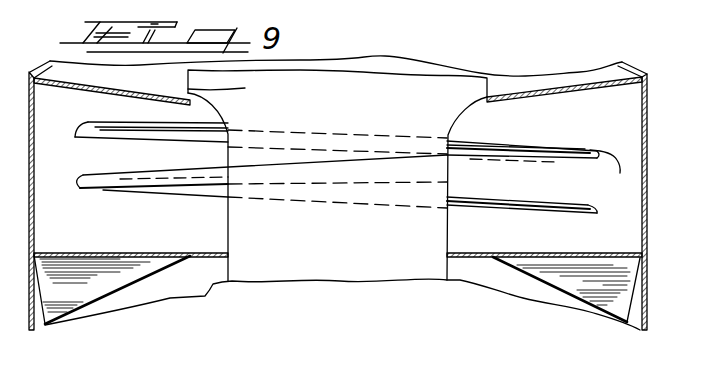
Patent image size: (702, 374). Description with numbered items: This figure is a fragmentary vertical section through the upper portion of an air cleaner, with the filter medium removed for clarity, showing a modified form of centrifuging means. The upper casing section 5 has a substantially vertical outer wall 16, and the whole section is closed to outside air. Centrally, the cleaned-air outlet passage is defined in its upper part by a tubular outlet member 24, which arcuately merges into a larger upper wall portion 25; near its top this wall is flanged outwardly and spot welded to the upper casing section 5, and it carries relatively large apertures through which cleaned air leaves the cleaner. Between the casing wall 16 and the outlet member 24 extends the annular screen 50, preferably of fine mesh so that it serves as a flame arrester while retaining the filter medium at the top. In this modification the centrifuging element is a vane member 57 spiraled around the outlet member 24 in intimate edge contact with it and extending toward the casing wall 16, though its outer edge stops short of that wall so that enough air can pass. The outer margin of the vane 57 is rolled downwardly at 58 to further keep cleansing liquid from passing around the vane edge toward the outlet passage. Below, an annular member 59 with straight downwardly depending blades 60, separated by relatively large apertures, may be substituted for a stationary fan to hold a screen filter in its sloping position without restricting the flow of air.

The upper casing section 5 is at (650, 111).
The vertical outer wall 16 is at (648, 184).
The tubular outlet member 24 is at (300, 262).
The upper wall portion 25 is at (337, 175).
The annular screen 50 is at (513, 93).
The vane member 57 is at (480, 160).
The rolled outer margin 58 is at (612, 199).
The annular member 59 is at (590, 257).
The blades 60 is at (580, 302).